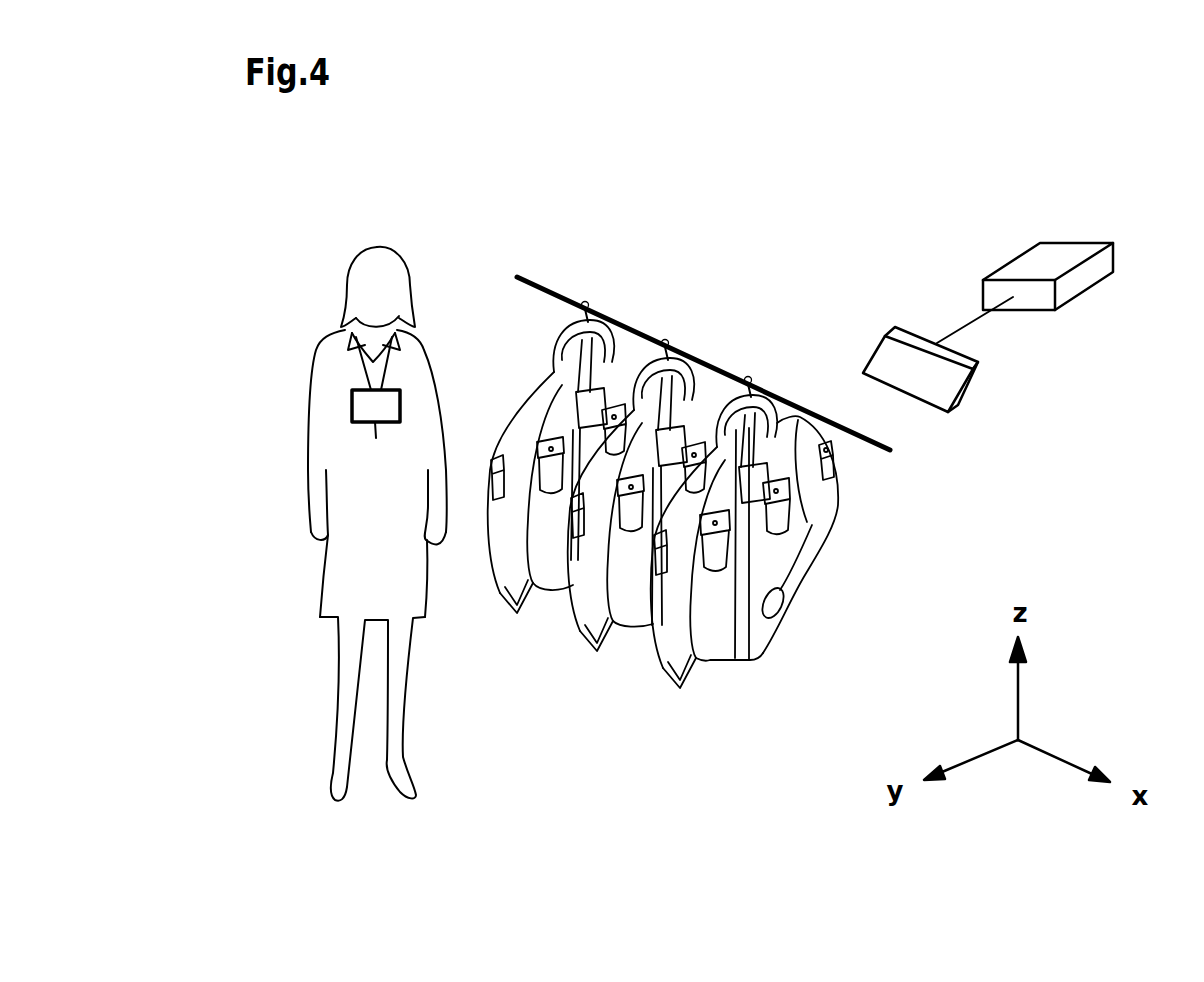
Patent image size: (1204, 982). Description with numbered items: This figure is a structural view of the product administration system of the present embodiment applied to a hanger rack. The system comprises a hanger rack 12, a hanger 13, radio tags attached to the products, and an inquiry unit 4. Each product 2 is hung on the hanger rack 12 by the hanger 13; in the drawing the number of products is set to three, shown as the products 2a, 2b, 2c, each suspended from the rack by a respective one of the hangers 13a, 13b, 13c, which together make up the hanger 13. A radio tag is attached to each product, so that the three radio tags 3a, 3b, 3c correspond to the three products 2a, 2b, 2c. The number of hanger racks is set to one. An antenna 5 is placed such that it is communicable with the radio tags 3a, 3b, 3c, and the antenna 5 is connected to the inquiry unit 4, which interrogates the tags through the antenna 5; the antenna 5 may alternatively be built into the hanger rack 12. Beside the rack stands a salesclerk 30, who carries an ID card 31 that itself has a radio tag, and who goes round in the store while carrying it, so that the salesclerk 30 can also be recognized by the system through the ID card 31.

The salesclerk 30 is at (327, 332).
The ID card 31 is at (365, 412).
The hanger rack 12 is at (518, 278).
The hanger 13 is at (722, 278).
The hanger 13a is at (585, 302).
The hanger 13b is at (667, 340).
The hanger 13c is at (798, 329).
The product 2 is at (663, 574).
The product 2a is at (522, 602).
The product 2b is at (632, 635).
The product 2c is at (744, 606).
The radio tag 3a is at (540, 370).
The radio tag 3b is at (666, 450).
The radio tag 3c is at (757, 492).
The inquiry unit 4 is at (1068, 290).
The antenna 5 is at (975, 393).